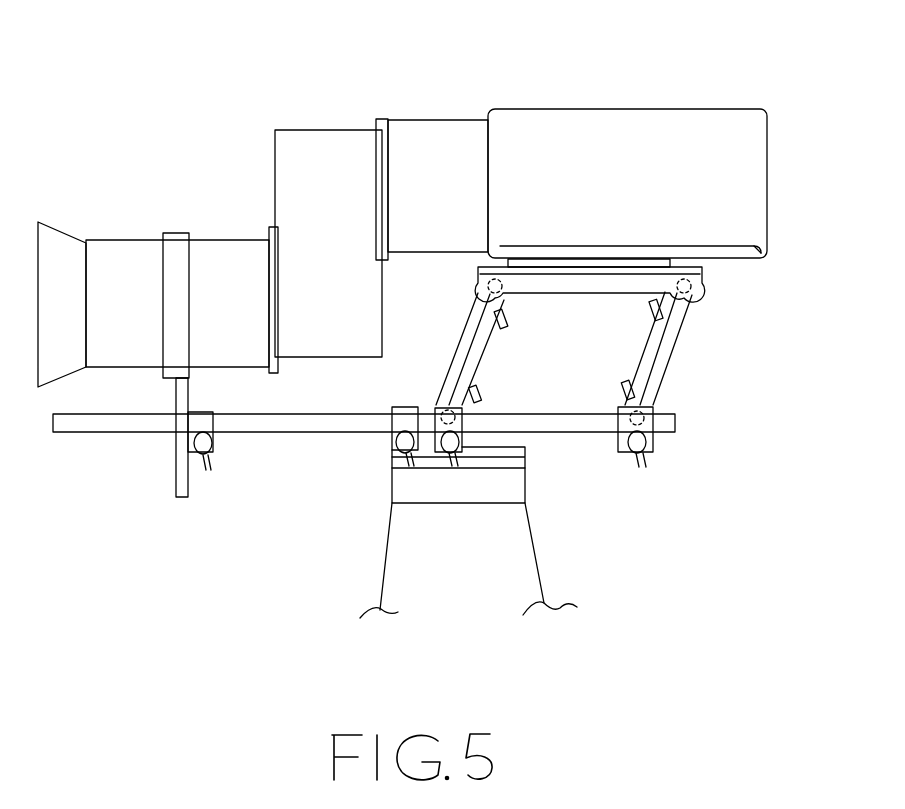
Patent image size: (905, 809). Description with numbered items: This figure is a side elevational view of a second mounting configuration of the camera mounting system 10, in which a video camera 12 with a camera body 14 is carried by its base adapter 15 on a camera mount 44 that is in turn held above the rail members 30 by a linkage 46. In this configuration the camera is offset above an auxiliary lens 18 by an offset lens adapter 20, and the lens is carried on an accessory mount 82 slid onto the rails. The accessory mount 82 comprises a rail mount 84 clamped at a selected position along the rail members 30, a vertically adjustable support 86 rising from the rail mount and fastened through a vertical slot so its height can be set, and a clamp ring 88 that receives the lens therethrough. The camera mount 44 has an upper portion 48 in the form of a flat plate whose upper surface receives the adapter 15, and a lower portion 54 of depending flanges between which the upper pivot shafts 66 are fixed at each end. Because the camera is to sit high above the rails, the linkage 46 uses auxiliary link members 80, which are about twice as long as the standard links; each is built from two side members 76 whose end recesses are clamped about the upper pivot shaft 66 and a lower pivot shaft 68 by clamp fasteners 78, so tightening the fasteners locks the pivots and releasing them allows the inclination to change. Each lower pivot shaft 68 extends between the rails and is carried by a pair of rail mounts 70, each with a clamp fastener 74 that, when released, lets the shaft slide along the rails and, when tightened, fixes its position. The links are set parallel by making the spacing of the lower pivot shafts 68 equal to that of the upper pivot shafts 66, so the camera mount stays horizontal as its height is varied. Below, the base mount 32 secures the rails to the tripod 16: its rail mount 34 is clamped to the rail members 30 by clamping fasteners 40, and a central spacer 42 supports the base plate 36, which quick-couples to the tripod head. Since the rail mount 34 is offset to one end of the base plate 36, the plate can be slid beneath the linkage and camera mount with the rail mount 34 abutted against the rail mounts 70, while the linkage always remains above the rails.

The camera mounting system 10 is at (655, 538).
The video camera 12 is at (627, 108).
The camera body 14 is at (712, 106).
The adapter 15 is at (736, 255).
The tripod 16 is at (380, 562).
The auxiliary lens 18 is at (213, 238).
The lens adapter 20 is at (303, 132).
The rail member 30 is at (87, 428).
The base mount 32 is at (360, 452).
The rail mount 34 is at (388, 419).
The base plate 36 is at (427, 468).
The clamping fastener 40 is at (393, 445).
The central spacer 42 is at (433, 455).
The camera mount 44 is at (553, 260).
The linkage 46 is at (742, 306).
The upper portion 48 is at (605, 268).
The lower portion 54 is at (635, 292).
The upper pivot shaft 66 is at (503, 282).
The lower pivot shaft 68 is at (434, 405).
The rail mount 70 is at (463, 437).
The clamp fastener 74 is at (450, 466).
The side member 76 is at (655, 373).
The clamp fastener 78 is at (627, 390).
The auxiliary link member 80 is at (449, 352).
The accessory mount 82 is at (157, 220).
The rail mount 84 is at (203, 410).
The vertically adjustable support 86 is at (174, 484).
The clamp ring 88 is at (163, 290).